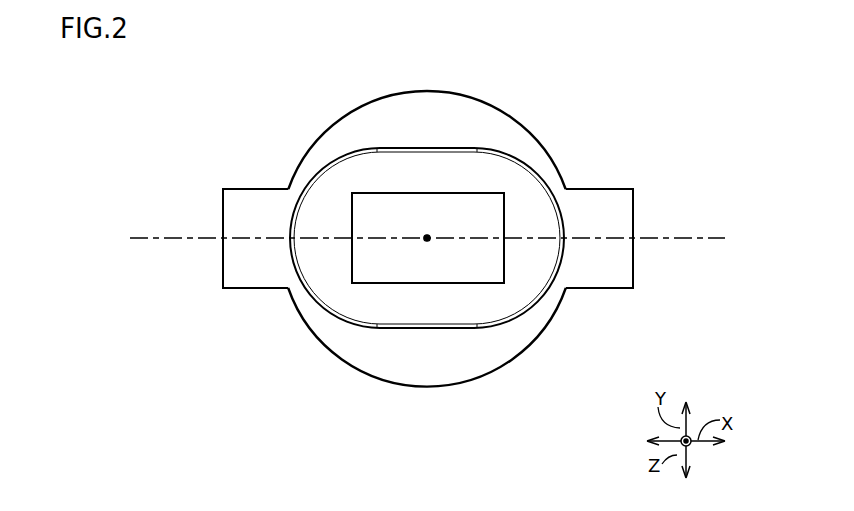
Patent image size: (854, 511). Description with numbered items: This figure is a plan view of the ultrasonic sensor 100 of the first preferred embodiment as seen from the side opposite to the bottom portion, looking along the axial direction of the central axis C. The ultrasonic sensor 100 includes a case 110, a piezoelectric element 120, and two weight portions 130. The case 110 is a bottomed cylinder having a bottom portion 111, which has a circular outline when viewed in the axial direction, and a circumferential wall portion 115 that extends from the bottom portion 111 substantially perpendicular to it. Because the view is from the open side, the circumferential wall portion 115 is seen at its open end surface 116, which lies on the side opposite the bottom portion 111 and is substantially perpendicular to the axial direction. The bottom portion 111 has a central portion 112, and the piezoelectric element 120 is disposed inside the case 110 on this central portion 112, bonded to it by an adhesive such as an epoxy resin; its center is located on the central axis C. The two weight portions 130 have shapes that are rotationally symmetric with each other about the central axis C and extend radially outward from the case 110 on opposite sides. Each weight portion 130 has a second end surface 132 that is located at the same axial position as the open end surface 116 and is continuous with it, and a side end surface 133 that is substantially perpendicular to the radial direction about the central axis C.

The ultrasonic sensor 100 is at (667, 119).
The case 110 is at (381, 96).
The bottom portion 111 is at (442, 268).
The central portion 112 is at (495, 303).
The circumferential wall portion 115 is at (448, 241).
The open end surface 116 is at (442, 268).
The piezoelectric element 120 is at (458, 265).
The weight portions 130 is at (424, 238).
The second end surface 132 is at (427, 238).
The side end surface 133 is at (233, 215).
The central axis C is at (427, 240).